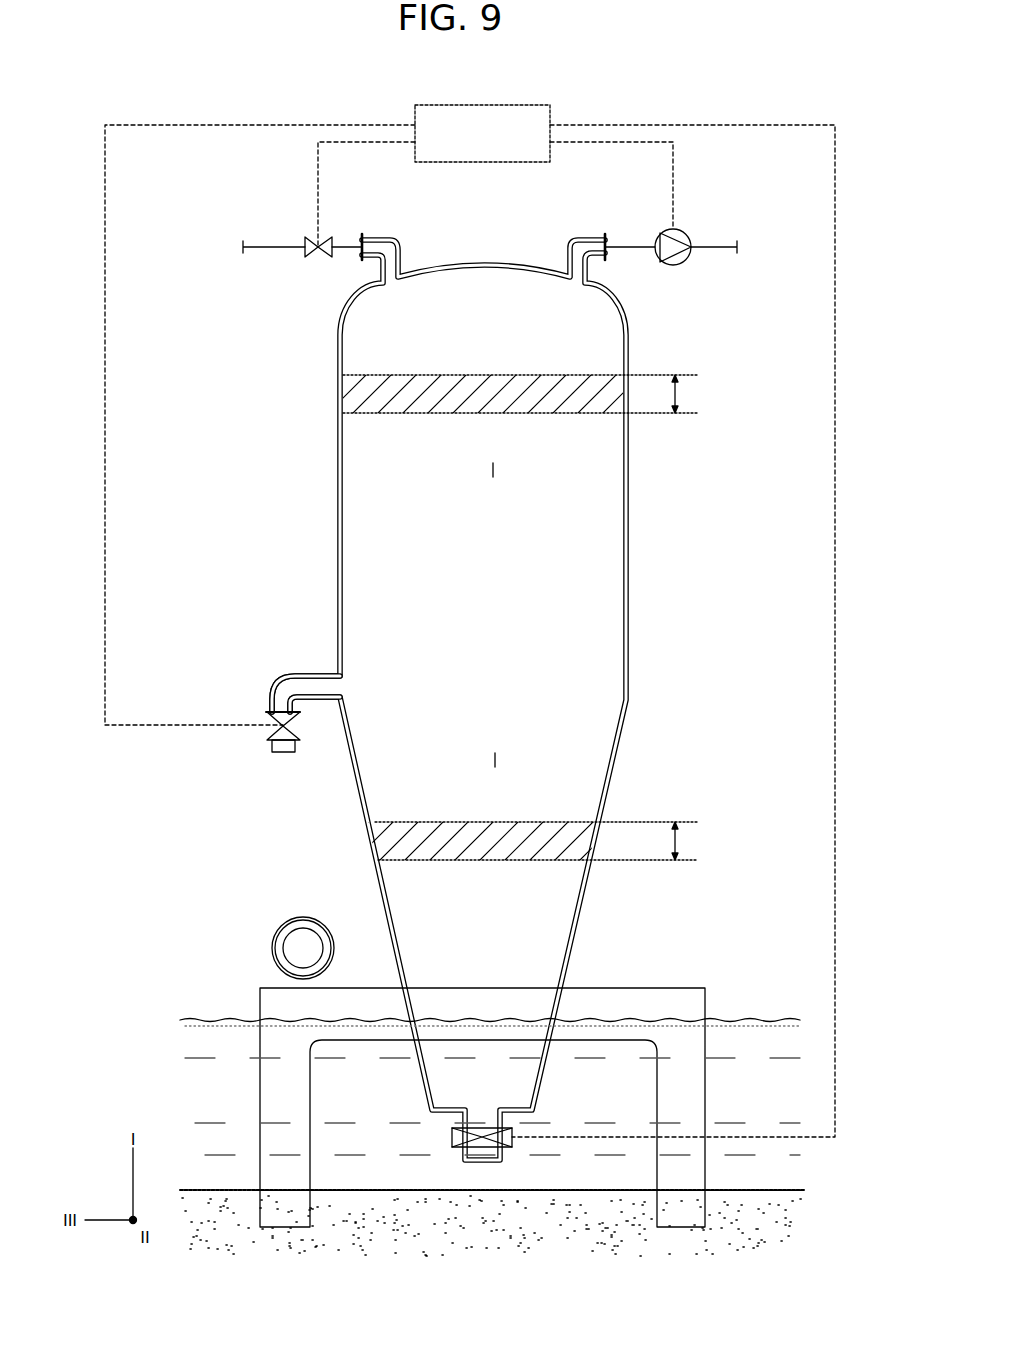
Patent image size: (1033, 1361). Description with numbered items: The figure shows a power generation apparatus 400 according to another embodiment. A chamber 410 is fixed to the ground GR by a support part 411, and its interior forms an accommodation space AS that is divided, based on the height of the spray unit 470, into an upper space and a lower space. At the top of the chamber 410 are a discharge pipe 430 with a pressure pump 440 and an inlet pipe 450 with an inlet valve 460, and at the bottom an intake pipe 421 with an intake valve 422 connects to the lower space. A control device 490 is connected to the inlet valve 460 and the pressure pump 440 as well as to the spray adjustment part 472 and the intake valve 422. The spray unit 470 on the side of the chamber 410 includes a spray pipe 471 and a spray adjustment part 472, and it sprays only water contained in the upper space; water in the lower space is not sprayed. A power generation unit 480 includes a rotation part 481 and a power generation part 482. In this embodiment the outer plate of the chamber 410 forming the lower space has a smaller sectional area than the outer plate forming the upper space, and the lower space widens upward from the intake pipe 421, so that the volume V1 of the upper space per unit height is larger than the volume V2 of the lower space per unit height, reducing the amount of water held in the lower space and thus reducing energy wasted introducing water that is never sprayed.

The power generation apparatus 400 is at (466, 85).
The chamber 410 is at (337, 514).
The support part 411 is at (680, 988).
The intake pipe 421 is at (455, 1148).
The intake valve 422 is at (453, 1130).
The discharge pipe 430 is at (590, 235).
The pressure pump 440 is at (688, 232).
The inlet pipe 450 is at (373, 236).
The inlet valve 460 is at (308, 240).
The spray unit 470 is at (228, 682).
The spray pipe 471 is at (297, 673).
The spray adjustment part 472 is at (238, 713).
The power generation unit 480 is at (232, 936).
The rotation part 481 is at (290, 921).
The power generation part 482 is at (260, 954).
The control device 490 is at (553, 124).
The volume of the upper space per unit height V1 is at (587, 376).
The volume of the lower space per unit height V2 is at (543, 830).
The accommodation space AS is at (744, 472).
The ground GR is at (742, 1190).